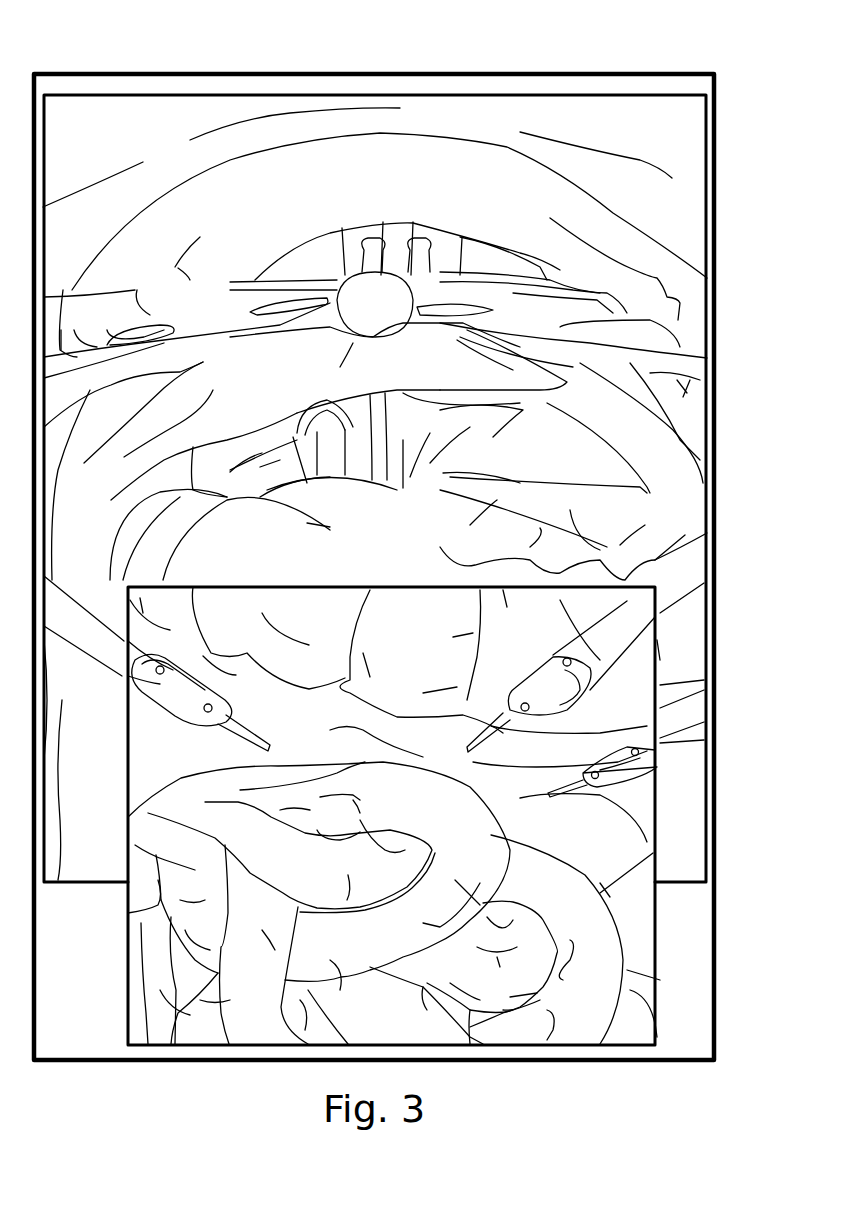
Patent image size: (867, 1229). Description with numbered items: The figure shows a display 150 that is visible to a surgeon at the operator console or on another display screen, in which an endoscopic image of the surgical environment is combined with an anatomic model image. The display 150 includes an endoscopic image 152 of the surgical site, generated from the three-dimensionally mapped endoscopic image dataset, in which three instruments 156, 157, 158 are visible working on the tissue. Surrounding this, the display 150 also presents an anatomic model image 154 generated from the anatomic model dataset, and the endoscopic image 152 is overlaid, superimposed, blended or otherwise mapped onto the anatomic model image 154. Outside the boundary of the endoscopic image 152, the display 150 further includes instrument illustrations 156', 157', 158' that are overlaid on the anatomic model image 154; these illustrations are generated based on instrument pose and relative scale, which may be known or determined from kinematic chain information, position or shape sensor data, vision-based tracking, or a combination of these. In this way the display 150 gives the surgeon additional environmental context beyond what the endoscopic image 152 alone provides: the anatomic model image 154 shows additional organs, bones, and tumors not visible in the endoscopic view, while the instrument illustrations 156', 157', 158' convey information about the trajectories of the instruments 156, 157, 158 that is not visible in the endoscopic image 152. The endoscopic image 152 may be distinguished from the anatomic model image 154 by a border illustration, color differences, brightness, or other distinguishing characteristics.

The display 150 is at (238, 68).
The endoscopic image 152 is at (351, 818).
The anatomic model image 154 is at (96, 890).
The instrument 156 is at (199, 710).
The instrument illustration 156' is at (84, 644).
The instrument 157 is at (561, 676).
The instrument illustration 157' is at (668, 582).
The instrument 158 is at (602, 797).
The instrument illustration 158' is at (727, 711).